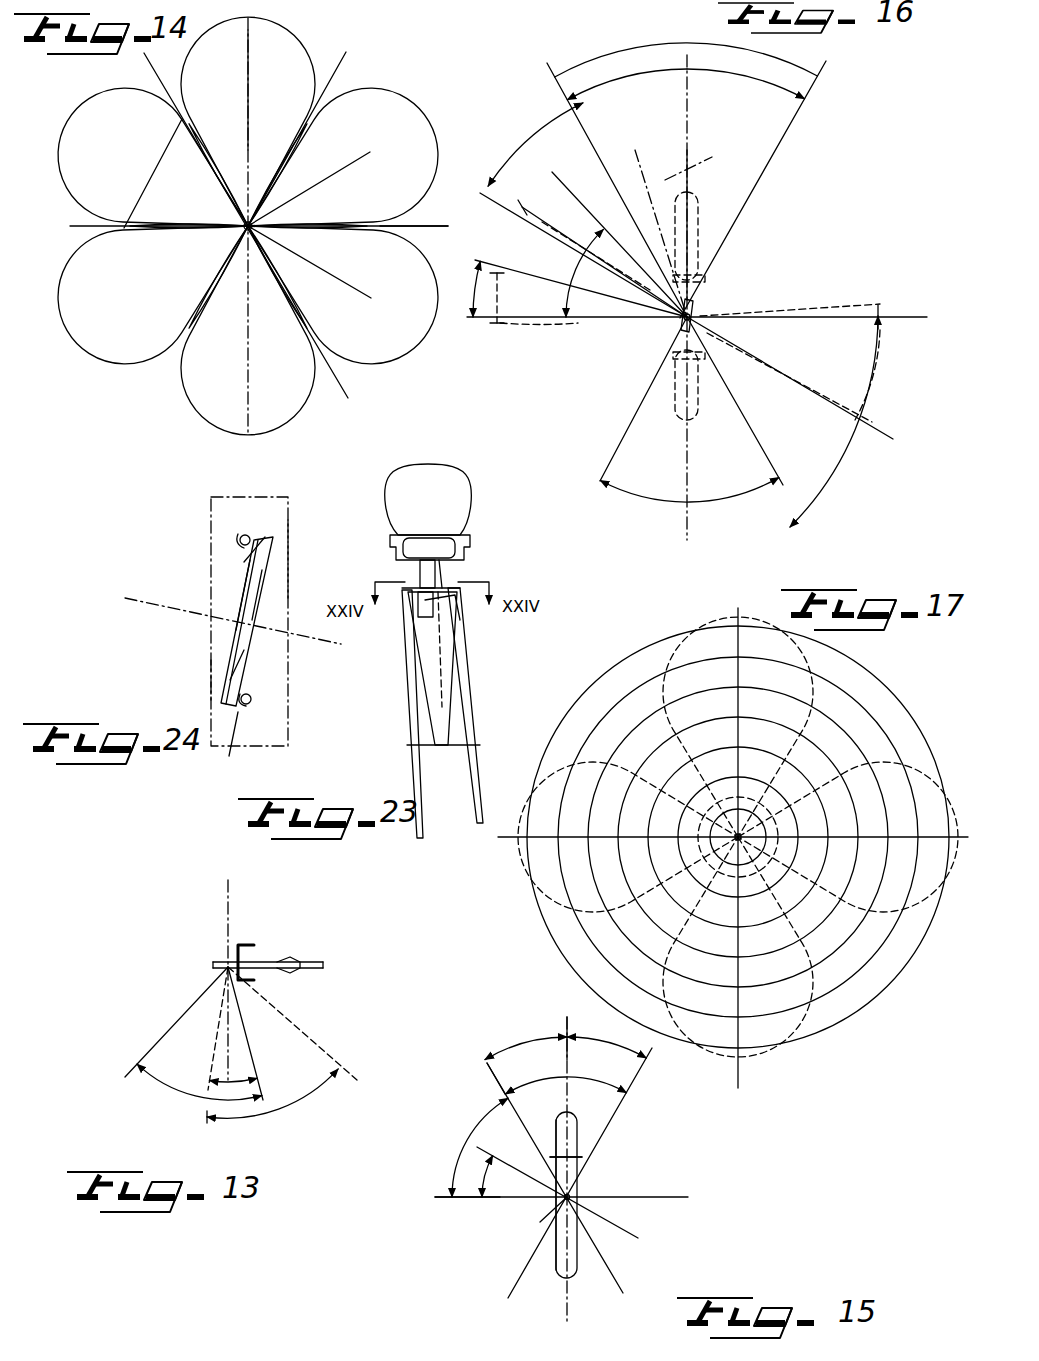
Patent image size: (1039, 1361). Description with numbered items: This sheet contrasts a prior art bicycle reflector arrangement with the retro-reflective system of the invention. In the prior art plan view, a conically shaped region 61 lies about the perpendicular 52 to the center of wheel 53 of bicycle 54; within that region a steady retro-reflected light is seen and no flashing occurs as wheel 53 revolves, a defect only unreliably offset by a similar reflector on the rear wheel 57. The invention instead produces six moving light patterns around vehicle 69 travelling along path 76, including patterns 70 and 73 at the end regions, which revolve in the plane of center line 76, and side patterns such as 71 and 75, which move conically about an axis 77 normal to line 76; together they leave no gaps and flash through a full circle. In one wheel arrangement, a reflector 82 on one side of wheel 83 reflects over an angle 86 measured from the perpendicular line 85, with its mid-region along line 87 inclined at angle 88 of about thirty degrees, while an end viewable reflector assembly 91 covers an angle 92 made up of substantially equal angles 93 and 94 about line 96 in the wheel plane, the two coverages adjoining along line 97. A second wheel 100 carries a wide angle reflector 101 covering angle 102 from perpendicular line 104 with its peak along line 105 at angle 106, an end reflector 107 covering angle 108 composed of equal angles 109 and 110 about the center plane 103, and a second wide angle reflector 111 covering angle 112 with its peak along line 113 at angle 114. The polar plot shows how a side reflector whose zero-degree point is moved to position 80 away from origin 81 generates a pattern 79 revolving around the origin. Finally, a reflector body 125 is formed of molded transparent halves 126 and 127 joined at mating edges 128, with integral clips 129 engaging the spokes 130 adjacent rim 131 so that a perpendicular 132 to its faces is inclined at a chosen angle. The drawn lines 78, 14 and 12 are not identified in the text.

In FIG. 14, the pattern 70 is at (220, 93).
In FIG. 14, the center line 76 is at (252, 112).
In FIG. 14, the pattern 71 is at (122, 156).
In FIG. 14, the chord line 78 is at (142, 194).
In FIG. 14, the vehicle 69 is at (309, 189).
In FIG. 14, the pattern 75 is at (384, 193).
In FIG. 14, the axis 77 is at (418, 225).
In FIG. 14, the lobe 14 is at (387, 282).
In FIG. 14, the lobe 12 is at (123, 317).
In FIG. 14, the pattern 73 is at (284, 375).
In FIG. 16, the angle 108 is at (658, 46).
In FIG. 16, the angle 109 is at (627, 84).
In FIG. 16, the angle 110 is at (724, 78).
In FIG. 16, the angle 102 is at (539, 138).
In FIG. 16, the straight line 105 is at (569, 178).
In FIG. 16, the straight line 113 is at (492, 254).
In FIG. 16, the angle 112 is at (506, 253).
In FIG. 16, the angle 106 is at (561, 303).
In FIG. 16, the angle 114 is at (465, 333).
In FIG. 16, the perpendicular line 104 is at (523, 325).
In FIG. 16, the wide angle reflector 101 is at (676, 326).
In FIG. 16, the end viewable reflector assembly 107 is at (703, 267).
In FIG. 16, the wheel 100 is at (700, 223).
In FIG. 24, the wheel 100 is at (289, 558).
In FIG. 23, the wheel 100 is at (470, 566).
In FIG. 16, the center plane 103 is at (713, 159).
In FIG. 16, the second wide angle reflector 111 is at (728, 300).
In FIG. 24, the reflector body 125 is at (237, 632).
In FIG. 23, the reflector body 125 is at (410, 662).
In FIG. 24, the spokes 130 is at (240, 540).
In FIG. 23, the spokes 130 is at (476, 818).
In FIG. 24, the integral clips 129 is at (258, 545).
In FIG. 23, the integral clips 129 is at (446, 612).
In FIG. 24, the molded transparent half 126 is at (238, 576).
In FIG. 24, the molded transparent half 127 is at (262, 593).
In FIG. 24, the perpendicular 132 is at (126, 607).
In FIG. 24, the mating edges 128 is at (244, 653).
In FIG. 24, the rim 131 is at (216, 666).
In FIG. 23, the rim 131 is at (400, 560).
In FIG. 17, the pattern 79 is at (678, 627).
In FIG. 17, the position 80 is at (739, 770).
In FIG. 17, the origin 81 is at (738, 837).
In FIG. 13, the wheel 53 is at (214, 965).
In FIG. 13, the bicycle 54 is at (280, 950).
In FIG. 13, the rear wheel 57 is at (323, 964).
In FIG. 13, the conically shaped region 61 is at (212, 1073).
In FIG. 13, the perpendicular 52 is at (232, 1052).
In FIG. 15, the reflector 82 is at (588, 1185).
In FIG. 15, the wheel 83 is at (580, 1132).
In FIG. 15, the end viewable reflector assembly 91 is at (589, 1152).
In FIG. 15, the line 87 is at (482, 1152).
In FIG. 15, the angle 88 is at (492, 1202).
In FIG. 15, the angle 86 is at (470, 1126).
In FIG. 15, the perpendicular line 85 is at (456, 1200).
In FIG. 15, the angle 92 is at (567, 1074).
In FIG. 15, the angle 93 is at (536, 1043).
In FIG. 15, the angle 94 is at (605, 1032).
In FIG. 15, the line 96 is at (558, 1018).
In FIG. 15, the adjoining line 97 is at (484, 1070).